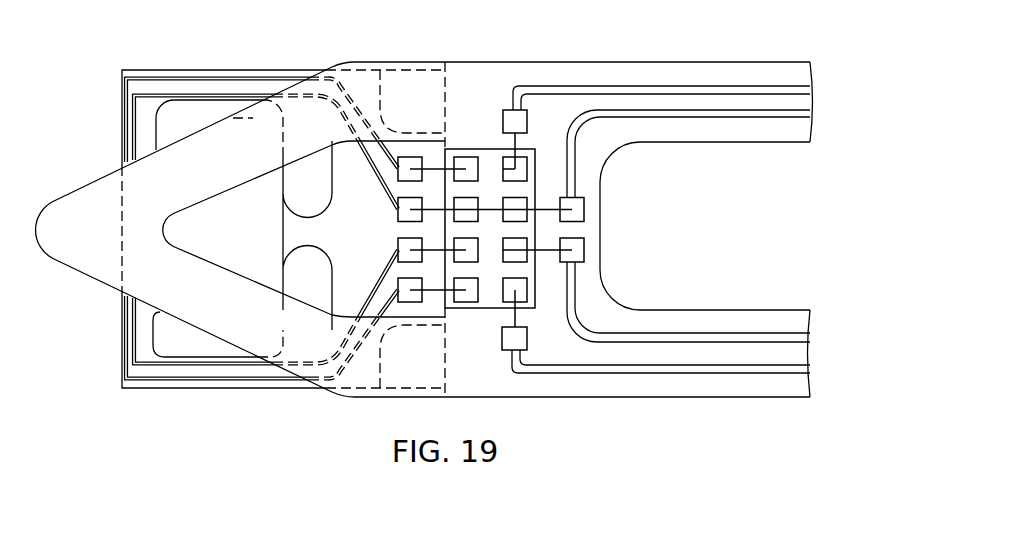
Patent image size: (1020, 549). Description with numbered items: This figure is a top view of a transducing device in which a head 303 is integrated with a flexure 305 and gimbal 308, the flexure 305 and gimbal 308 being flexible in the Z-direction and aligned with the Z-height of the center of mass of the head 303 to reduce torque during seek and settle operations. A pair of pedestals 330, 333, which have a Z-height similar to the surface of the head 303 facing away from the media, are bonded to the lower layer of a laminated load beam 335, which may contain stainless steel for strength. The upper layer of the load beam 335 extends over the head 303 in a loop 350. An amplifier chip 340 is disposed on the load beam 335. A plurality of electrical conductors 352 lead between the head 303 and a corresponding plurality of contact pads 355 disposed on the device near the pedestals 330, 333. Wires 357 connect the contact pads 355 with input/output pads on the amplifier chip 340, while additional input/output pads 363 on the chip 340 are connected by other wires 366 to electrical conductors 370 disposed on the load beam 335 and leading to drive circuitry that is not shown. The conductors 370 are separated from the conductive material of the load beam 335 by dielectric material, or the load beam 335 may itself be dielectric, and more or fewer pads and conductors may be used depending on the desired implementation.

The head 303 is at (257, 215).
The flexure 305 is at (215, 69).
The gimbal 308 is at (122, 128).
The pedestal 330 is at (395, 57).
The pedestal 333 is at (388, 396).
The load beam 335 is at (723, 62).
The amplifier chip 340 is at (463, 149).
The loop 350 is at (88, 185).
The electrical conductors 352 is at (161, 77).
The contact pads 355 is at (398, 243).
The wires 357 is at (435, 292).
The input/output pads 363 is at (518, 165).
The wires 366 is at (547, 252).
The electrical conductors 370 is at (688, 333).